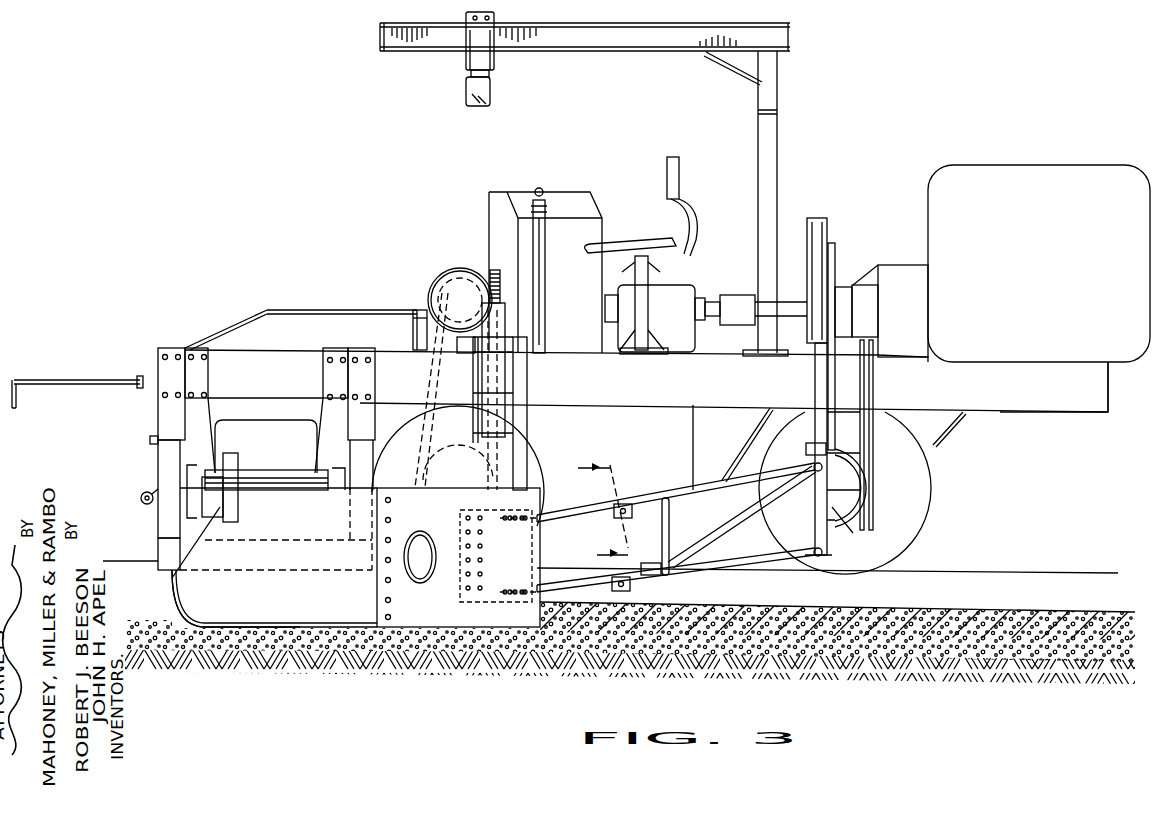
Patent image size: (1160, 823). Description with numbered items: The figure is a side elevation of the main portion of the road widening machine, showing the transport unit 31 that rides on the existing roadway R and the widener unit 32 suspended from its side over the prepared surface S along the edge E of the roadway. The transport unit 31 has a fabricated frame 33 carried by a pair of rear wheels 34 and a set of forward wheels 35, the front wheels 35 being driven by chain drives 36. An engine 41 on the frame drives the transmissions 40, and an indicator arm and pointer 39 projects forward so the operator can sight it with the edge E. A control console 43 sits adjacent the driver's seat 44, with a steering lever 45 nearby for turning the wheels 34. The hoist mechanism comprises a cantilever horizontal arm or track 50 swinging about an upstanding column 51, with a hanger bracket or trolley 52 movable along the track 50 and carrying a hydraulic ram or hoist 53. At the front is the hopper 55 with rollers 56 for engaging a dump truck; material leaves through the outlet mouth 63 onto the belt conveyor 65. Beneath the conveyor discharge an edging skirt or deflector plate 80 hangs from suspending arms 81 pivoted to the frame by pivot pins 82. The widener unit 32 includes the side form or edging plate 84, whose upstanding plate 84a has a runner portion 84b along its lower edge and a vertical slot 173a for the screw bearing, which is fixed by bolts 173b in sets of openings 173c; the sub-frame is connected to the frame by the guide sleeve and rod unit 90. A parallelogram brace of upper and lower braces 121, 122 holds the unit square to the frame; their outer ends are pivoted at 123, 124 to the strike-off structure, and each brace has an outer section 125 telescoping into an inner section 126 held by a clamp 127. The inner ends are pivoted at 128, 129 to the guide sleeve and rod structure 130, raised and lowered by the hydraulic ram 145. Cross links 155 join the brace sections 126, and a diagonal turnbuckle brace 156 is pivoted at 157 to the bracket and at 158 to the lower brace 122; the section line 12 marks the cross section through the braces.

The cantilever horizontal arm or track 50 is at (620, 42).
The hanger bracket or trolley 52 is at (494, 56).
The hydraulic ram or hoist 53 is at (488, 97).
The upstanding column 51 is at (778, 105).
The control console 43 is at (592, 205).
The steering lever 45 is at (546, 190).
The driver's seat 44 is at (634, 247).
The transmission 40 is at (676, 300).
The hydraulic ram 145 is at (828, 232).
The guide sleeve and rod structure 130 is at (812, 391).
The engine 41 is at (1038, 245).
The frame 33 is at (1005, 412).
The transport unit 31 is at (1072, 417).
The hopper 55 is at (268, 310).
The chain drive 36 is at (418, 308).
The indicator arm and pointer 39 is at (80, 381).
The pivot pin 82 is at (149, 440).
The roller 56 is at (142, 495).
The suspending arm 81 is at (157, 518).
The edging skirt or deflector plate 80 is at (160, 553).
The outlet mouth 63 is at (258, 430).
The belt conveyor 65 is at (260, 470).
The side form or edging plate 84 is at (312, 607).
The runner portion 84b is at (170, 586).
The upstanding plate 84a is at (218, 603).
The widener unit 32 is at (262, 612).
The bolt 173b is at (385, 518).
The openings 173c is at (375, 578).
The vertical slot 173a is at (442, 590).
The pivot 123 is at (503, 516).
The pivot 124 is at (503, 598).
The forward wheels 35 is at (540, 455).
The guide sleeve and rod unit 90 is at (477, 300).
The section line 12- 12 is at (603, 500).
The upper brace 121 is at (574, 500).
The clamp 127 is at (626, 503).
The cross link 155 is at (655, 510).
The diagonal turnbuckle brace 156 is at (688, 545).
The lower brace 122 is at (704, 572).
The outer section 125 is at (614, 587).
The pivot 158 is at (660, 576).
The pivot 128 is at (822, 470).
The pivot 129 is at (850, 556).
The inner section 126 is at (699, 478).
The rear wheels 34 is at (930, 492).
The pivot 157 is at (853, 528).
The existing roadway R is at (978, 572).
The prepared surface S is at (749, 604).
The edge E is at (1062, 590).